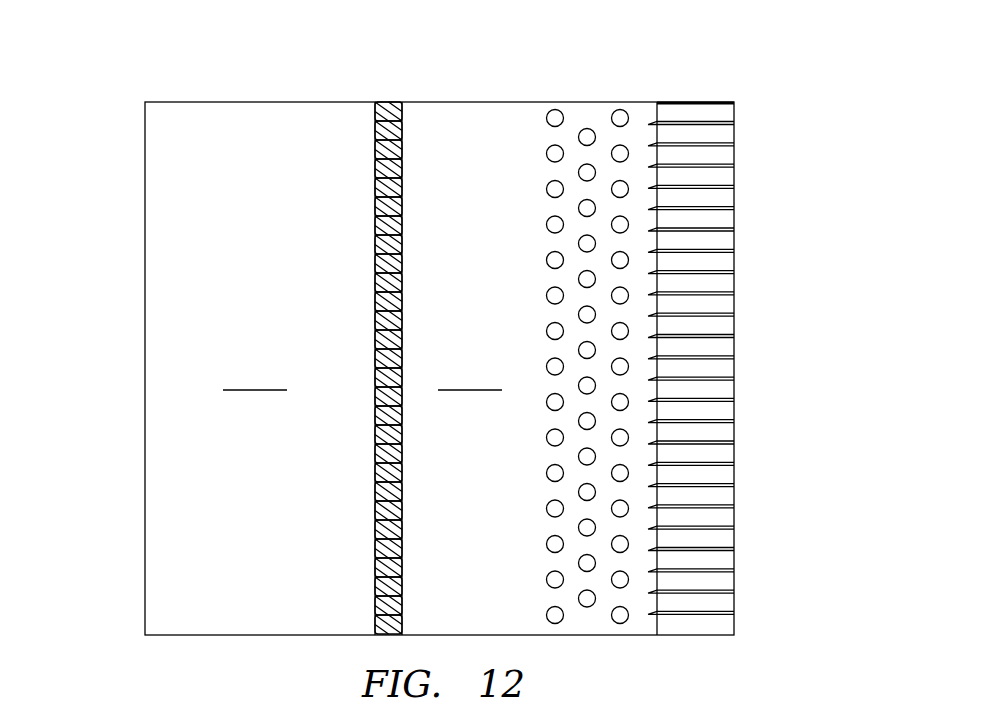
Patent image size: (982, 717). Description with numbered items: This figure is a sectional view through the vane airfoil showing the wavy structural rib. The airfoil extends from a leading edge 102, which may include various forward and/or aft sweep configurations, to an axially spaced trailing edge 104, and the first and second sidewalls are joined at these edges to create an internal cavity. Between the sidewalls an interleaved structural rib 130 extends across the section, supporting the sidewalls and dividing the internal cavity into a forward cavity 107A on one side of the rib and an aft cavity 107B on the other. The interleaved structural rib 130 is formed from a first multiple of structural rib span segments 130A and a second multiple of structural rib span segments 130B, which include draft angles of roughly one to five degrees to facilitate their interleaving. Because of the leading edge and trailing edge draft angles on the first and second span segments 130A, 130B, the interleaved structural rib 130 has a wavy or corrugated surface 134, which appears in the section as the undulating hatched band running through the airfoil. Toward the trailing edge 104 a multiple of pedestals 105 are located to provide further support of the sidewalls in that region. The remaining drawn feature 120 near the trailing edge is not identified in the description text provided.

The leading edge 102 is at (145, 201).
The trailing edge 104 is at (734, 239).
The pedestals 105 is at (587, 128).
The forward cavity 107A is at (255, 376).
The aft cavity 107B is at (470, 376).
The fins 120 is at (705, 174).
The interleaved structural rib 130 is at (386, 104).
The first multiple of structural rib span segments 130A is at (402, 515).
The second multiple of structural rib span segments 130B is at (377, 530).
The wavy or corrugated surface 134 is at (375, 243).